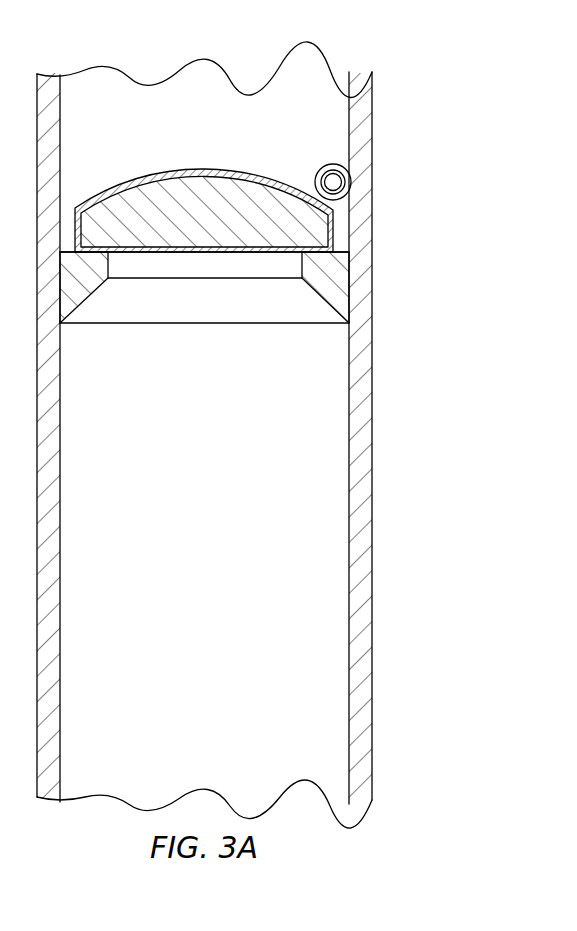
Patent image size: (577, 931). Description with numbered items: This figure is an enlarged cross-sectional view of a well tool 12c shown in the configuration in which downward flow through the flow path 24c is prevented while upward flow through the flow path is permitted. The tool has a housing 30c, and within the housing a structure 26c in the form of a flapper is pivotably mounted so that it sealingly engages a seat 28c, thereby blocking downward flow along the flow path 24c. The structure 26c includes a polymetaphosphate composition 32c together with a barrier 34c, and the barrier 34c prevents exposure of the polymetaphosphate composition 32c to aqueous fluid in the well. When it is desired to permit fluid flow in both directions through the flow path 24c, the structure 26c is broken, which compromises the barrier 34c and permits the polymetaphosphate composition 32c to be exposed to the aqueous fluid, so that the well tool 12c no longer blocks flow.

The well tool 12c is at (432, 97).
The flow path 24c is at (170, 495).
The structure 26c is at (167, 165).
The seat 28c is at (320, 246).
The housing 30c is at (373, 500).
The polymetaphosphate composition 32c is at (225, 190).
The barrier 34c is at (190, 252).